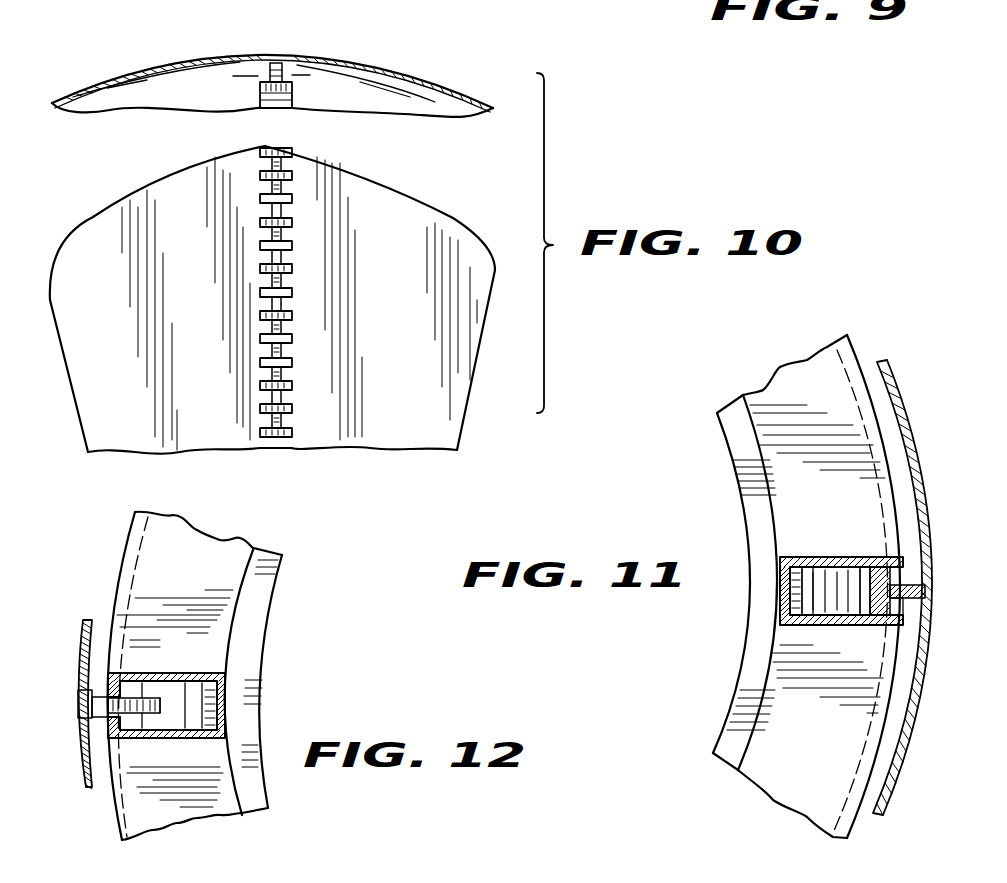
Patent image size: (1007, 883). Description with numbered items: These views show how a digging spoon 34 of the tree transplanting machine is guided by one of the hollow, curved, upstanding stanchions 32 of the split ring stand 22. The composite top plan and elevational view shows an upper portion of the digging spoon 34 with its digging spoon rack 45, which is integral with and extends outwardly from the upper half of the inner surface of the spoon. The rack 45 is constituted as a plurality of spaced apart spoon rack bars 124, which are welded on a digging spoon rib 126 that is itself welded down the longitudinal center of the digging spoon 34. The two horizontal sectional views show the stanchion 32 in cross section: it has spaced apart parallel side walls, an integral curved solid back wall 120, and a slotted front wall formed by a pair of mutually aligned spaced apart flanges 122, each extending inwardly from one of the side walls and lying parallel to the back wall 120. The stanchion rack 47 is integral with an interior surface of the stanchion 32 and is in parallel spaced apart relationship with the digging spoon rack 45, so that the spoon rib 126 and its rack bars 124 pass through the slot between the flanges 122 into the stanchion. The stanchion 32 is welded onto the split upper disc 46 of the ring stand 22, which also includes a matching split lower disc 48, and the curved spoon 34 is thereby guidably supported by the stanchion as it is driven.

In FIG. 11, the split ring stand 22 is at (722, 445).
In FIG. 12, the stanchion 32 is at (165, 738).
In FIG. 11, the stanchion 32 is at (797, 555).
In FIG. 10, the digging spoon 34 is at (453, 118).
In FIG. 12, the digging spoon 34 is at (87, 623).
In FIG. 11, the digging spoon 34 is at (897, 388).
In FIG. 10, the digging spoon rack 45 is at (297, 88).
In FIG. 11, the digging spoon rack 45 is at (838, 575).
In FIG. 12, the split upper disc 46 is at (210, 548).
In FIG. 11, the split upper disc 46 is at (797, 385).
In FIG. 12, the stanchion rack 47 is at (210, 712).
In FIG. 11, the stanchion rack 47 is at (797, 610).
In FIG. 12, the split lower disc 48 is at (265, 562).
In FIG. 11, the split lower disc 48 is at (730, 415).
In FIG. 12, the back wall 120 is at (220, 692).
In FIG. 11, the back wall 120 is at (797, 600).
In FIG. 12, the flange 122 is at (108, 728).
In FIG. 11, the flange 122 is at (905, 603).
In FIG. 10, the spoon rack bar 124 is at (292, 315).
In FIG. 10, the digging spoon rib 126 is at (270, 66).
In FIG. 12, the digging spoon rib 126 is at (97, 690).
In FIG. 11, the digging spoon rib 126 is at (912, 575).